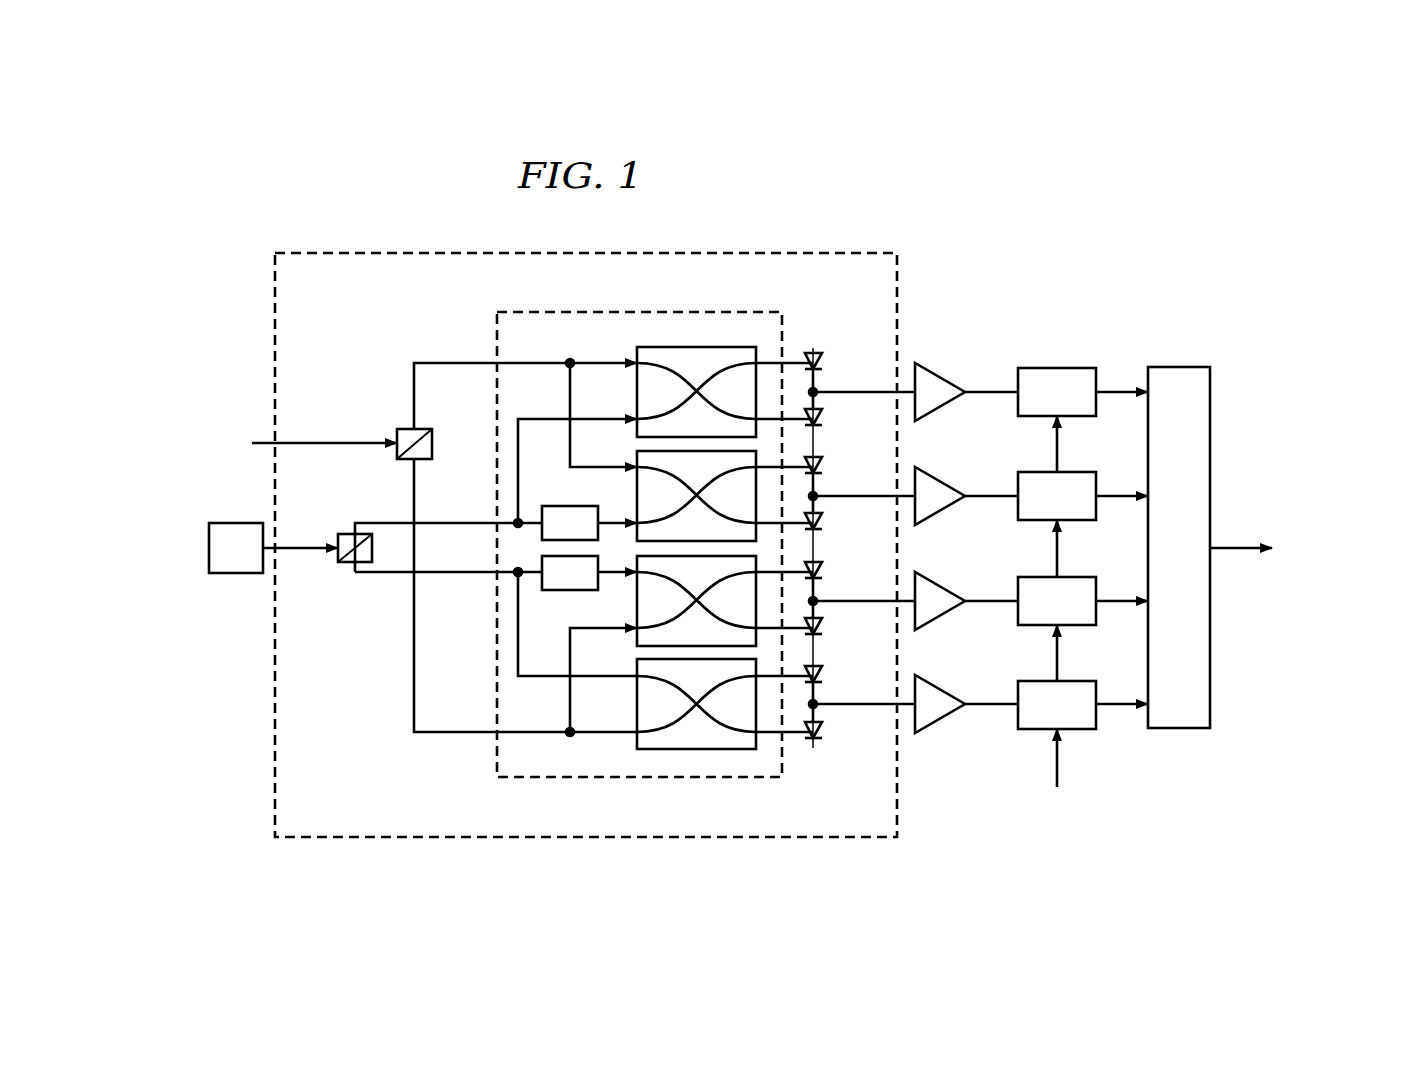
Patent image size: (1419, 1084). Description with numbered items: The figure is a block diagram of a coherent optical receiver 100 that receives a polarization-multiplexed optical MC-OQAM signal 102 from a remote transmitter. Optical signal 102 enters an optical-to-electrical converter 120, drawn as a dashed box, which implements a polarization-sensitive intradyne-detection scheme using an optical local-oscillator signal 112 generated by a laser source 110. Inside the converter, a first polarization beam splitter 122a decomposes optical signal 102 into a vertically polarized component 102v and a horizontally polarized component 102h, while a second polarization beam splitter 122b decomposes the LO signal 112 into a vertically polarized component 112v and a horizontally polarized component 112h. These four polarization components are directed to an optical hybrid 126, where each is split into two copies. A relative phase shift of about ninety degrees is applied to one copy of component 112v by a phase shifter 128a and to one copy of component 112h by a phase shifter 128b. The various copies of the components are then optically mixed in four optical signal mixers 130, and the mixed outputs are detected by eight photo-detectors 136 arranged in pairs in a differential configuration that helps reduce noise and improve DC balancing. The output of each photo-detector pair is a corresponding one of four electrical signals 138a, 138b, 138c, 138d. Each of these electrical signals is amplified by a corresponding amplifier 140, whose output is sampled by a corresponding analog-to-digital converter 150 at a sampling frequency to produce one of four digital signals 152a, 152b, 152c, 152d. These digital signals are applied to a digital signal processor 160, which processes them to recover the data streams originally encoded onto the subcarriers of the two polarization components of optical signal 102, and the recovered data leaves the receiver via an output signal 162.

The coherent optical receiver 100 is at (593, 219).
The polarization-multiplexed optical MC-OQAM signal 102 is at (303, 440).
The vertically polarized component 102v is at (414, 390).
The horizontally polarized component 102h is at (414, 490).
The laser source 110 is at (209, 548).
The optical local-oscillator signal 112 is at (299, 552).
The vertically polarized component 112v is at (470, 525).
The horizontally polarized component 112h is at (455, 576).
The optical-to-electrical converter 120 is at (275, 268).
The polarization beam splitter 122a is at (394, 456).
The polarization beam splitter 122b is at (345, 565).
The optical hybrid 126 is at (653, 312).
The phase shifter 128a is at (556, 506).
The phase shifter 128b is at (556, 590).
The optical signal mixer 130 is at (711, 372).
The photo-detector 136 is at (814, 338).
The electrical signal 138a is at (854, 389).
The electrical signal 138b is at (854, 493).
The electrical signal 138c is at (854, 597).
The electrical signal 138d is at (854, 700).
The amplifier 140 is at (933, 370).
The analog-to-digital converter 150 is at (1043, 420).
The digital signal 152a is at (1114, 388).
The digital signal 152b is at (1114, 492).
The digital signal 152c is at (1114, 597).
The digital signal 152d is at (1114, 700).
The digital signal processor 160 is at (1170, 367).
The output signal 162 is at (1234, 544).